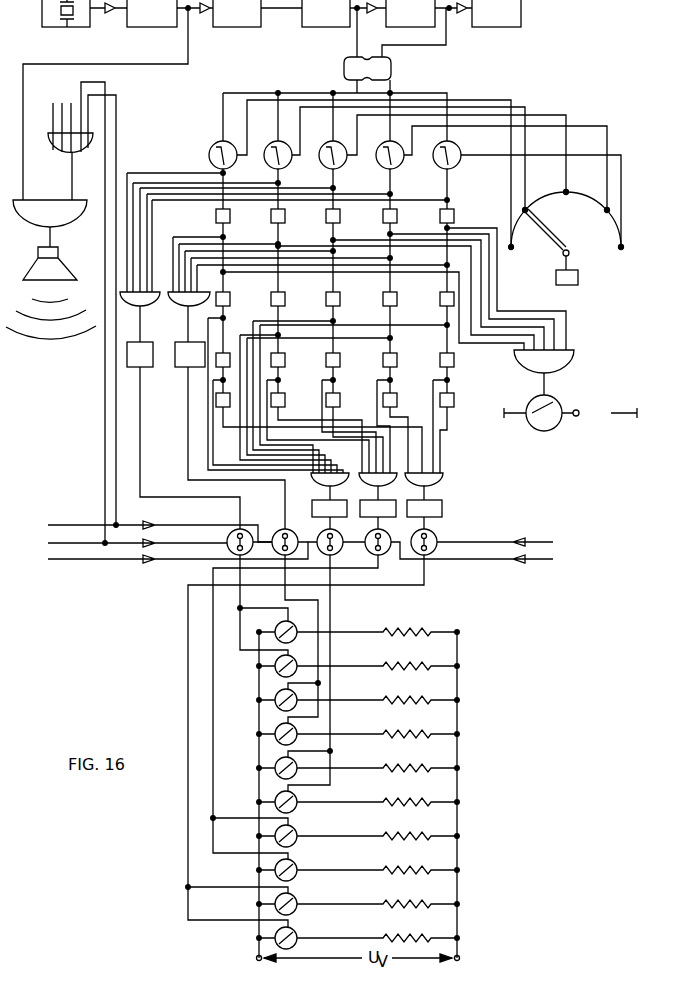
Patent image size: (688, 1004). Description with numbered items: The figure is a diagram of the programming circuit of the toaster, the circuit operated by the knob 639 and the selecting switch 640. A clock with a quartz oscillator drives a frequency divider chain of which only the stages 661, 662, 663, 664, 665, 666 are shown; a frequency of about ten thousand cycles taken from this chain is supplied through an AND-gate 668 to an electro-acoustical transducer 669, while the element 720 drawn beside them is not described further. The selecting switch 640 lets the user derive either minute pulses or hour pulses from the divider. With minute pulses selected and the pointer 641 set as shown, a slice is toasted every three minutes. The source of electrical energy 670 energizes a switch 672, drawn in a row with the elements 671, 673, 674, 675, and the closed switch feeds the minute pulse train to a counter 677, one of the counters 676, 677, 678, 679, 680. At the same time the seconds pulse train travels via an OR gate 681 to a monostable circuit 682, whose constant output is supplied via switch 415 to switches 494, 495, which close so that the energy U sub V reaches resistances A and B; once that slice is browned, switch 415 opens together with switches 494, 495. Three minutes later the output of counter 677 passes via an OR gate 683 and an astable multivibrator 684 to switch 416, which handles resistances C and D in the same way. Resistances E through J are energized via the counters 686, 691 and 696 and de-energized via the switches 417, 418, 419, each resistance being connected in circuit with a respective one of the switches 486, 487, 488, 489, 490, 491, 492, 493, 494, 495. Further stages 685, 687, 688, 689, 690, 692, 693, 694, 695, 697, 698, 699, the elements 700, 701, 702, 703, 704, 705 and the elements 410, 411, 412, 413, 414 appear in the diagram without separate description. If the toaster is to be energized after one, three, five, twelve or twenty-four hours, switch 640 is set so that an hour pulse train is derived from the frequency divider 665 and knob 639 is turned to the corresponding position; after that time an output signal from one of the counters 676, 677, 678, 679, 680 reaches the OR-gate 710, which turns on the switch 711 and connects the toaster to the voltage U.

The frequency divider stage 661 is at (62, 27).
The frequency divider stage 662 is at (156, 27).
The frequency divider stage 663 is at (244, 27).
The frequency divider stage 664 is at (325, 27).
The frequency divider stage 665 is at (416, 27).
The frequency divider stage 666 is at (497, 27).
The selecting switch 640 is at (344, 70).
The light sensor 720 is at (89, 149).
The AND-gate 668 is at (46, 200).
The electro-acoustical transducer 669 is at (62, 270).
The time selector switch 671 is at (209, 156).
The switch 672 is at (268, 165).
The time selector switch 673 is at (323, 165).
The time selector switch 674 is at (380, 165).
The time selector switch 675 is at (437, 165).
The counter 676 is at (216, 216).
The counter 677 is at (271, 216).
The counter 678 is at (326, 216).
The counter 679 is at (383, 216).
The counter 680 is at (455, 215).
The OR gate 681 is at (133, 306).
The monostable circuit 682 is at (127, 358).
The OR gate 683 is at (177, 306).
The astable multi-vibrator 684 is at (176, 366).
The divider stage 2 685 is at (231, 298).
The counter 686 is at (286, 298).
The divider stage 10 687 is at (341, 298).
The divider stage 24 688 is at (398, 298).
The divider stage 48 689 is at (448, 307).
The divider stage 3 690 is at (216, 367).
The counter 691 is at (286, 364).
The divider stage 15 692 is at (341, 364).
The divider stage 36 693 is at (398, 364).
The divider stage 72 694 is at (455, 356).
The divider stage 4 695 is at (216, 405).
The counter 696 is at (286, 397).
The divider stage 20 697 is at (341, 397).
The divider stage 48 698 is at (398, 397).
The divider stage 96 699 is at (455, 390).
The amplifier 700 is at (312, 509).
The amplifier 701 is at (383, 507).
The amplifier 702 is at (442, 506).
The AND gate 703 is at (315, 478).
The AND gate 704 is at (372, 487).
The AND gate 705 is at (441, 482).
The OR-gate 710 is at (565, 370).
The switch 711 is at (539, 432).
The knob 639 is at (595, 281).
The pointer 641 is at (556, 239).
The source of electrical energy 670 is at (571, 286).
The supply line 410 is at (75, 525).
The supply line 411 is at (168, 543).
The supply line 412 is at (78, 561).
The supply line 413 is at (495, 540).
The supply line 414 is at (496, 561).
The switch 415 is at (227, 542).
The switch 416 is at (294, 535).
The switch 417 is at (339, 535).
The switch 418 is at (387, 535).
The switch 419 is at (434, 536).
The switch 486 is at (296, 945).
The switch 487 is at (296, 911).
The switch 488 is at (296, 877).
The switch 489 is at (295, 842).
The switch 490 is at (295, 808).
The switch 491 is at (275, 768).
The switch 492 is at (275, 734).
The switch 493 is at (275, 700).
The switch 494 is at (278, 674).
The switch 495 is at (278, 640).